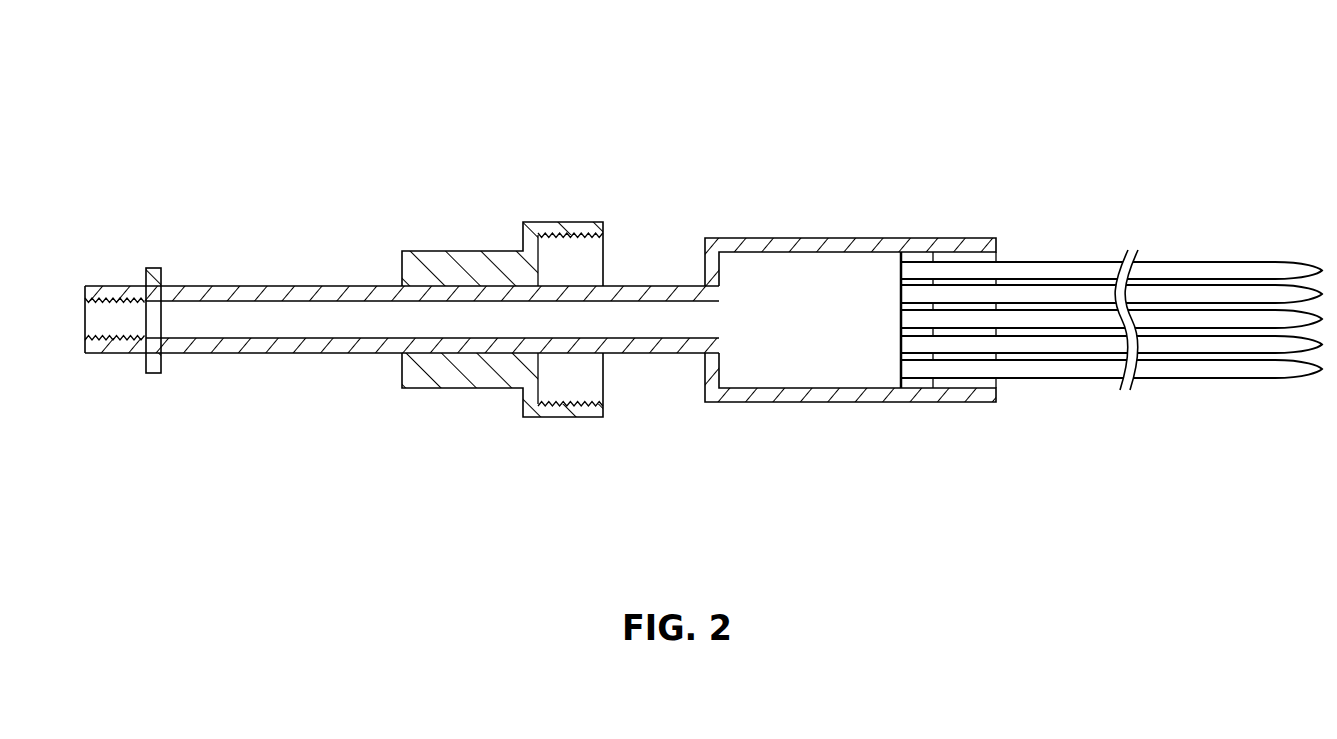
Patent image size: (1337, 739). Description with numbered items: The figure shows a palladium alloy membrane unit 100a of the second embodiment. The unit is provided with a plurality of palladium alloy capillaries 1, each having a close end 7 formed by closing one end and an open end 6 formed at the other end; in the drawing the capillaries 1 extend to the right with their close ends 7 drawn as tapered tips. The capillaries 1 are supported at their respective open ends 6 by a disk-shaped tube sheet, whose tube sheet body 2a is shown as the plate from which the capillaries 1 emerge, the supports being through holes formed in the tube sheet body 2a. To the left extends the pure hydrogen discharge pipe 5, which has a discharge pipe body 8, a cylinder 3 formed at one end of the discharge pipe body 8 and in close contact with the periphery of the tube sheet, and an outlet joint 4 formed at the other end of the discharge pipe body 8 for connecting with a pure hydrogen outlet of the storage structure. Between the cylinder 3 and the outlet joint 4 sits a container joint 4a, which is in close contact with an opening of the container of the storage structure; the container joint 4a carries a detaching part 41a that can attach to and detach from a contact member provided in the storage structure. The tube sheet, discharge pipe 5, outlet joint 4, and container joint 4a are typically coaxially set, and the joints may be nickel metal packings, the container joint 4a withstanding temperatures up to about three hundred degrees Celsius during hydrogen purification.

The palladium alloy membrane unit 100a is at (719, 175).
The palladium alloy capillaries 1 is at (1183, 262).
The tube sheet body 2a is at (900, 280).
The cylinder 3 is at (938, 237).
The outlet joint 4 is at (158, 268).
The container joint 4a is at (533, 418).
The detaching part 41a is at (600, 392).
The pure hydrogen discharge pipe 5 is at (307, 285).
The open end 6 is at (900, 322).
The close end 7 is at (1302, 347).
The discharge pipe body 8 is at (305, 354).